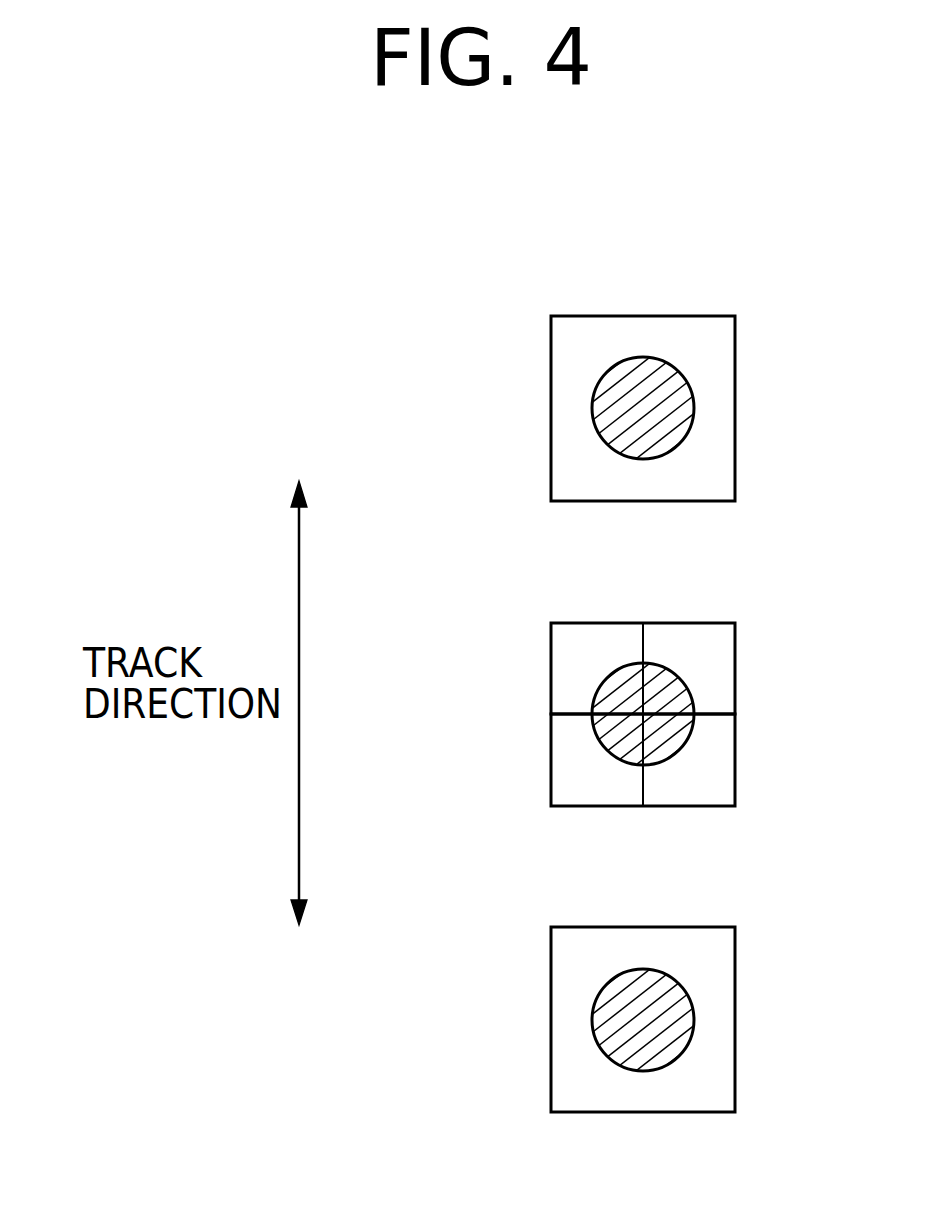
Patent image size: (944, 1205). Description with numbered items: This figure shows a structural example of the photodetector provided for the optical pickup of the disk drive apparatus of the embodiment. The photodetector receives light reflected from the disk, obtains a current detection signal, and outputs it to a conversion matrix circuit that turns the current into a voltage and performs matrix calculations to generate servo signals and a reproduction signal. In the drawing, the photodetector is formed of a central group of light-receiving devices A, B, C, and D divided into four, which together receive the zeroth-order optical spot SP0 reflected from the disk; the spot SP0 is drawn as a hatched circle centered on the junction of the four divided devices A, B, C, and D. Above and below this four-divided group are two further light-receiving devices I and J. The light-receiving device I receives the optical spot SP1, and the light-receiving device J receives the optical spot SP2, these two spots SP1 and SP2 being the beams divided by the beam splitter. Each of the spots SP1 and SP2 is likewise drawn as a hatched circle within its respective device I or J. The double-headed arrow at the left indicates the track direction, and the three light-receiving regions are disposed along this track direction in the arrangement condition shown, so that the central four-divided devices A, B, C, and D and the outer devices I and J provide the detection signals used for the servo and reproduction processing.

The optical spot SP1 is at (593, 433).
The 0th-order optical spot SP0 is at (593, 698).
The optical spot SP2 is at (592, 1025).
The light-receiving device I is at (718, 383).
The light-receiving device J is at (713, 972).
The light-receiving device A is at (580, 651).
The light-receiving device B is at (575, 782).
The light-receiving device C is at (708, 775).
The light-receiving device D is at (708, 658).